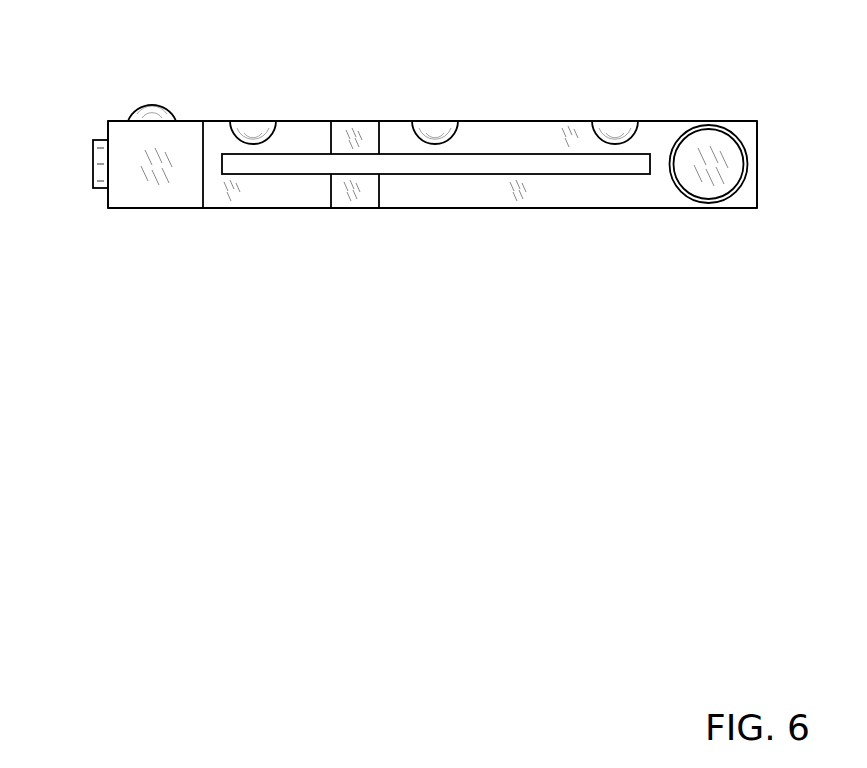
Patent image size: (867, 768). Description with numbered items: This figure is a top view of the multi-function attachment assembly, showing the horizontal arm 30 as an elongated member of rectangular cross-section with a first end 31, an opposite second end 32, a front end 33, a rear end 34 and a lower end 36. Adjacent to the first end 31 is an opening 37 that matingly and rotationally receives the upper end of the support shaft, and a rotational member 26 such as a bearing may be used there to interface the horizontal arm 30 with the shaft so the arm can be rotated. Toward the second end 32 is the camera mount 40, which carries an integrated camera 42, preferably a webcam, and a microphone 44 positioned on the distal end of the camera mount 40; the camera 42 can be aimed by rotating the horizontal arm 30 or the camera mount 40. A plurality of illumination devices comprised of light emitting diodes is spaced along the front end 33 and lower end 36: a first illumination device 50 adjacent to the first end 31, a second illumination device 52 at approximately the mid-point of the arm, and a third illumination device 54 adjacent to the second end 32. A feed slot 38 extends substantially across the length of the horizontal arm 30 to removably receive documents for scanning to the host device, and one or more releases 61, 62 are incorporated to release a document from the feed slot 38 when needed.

The rotational member 26 is at (712, 143).
The horizontal arm 30 is at (497, 208).
The first end 31 is at (759, 157).
The second end 32 is at (108, 197).
The front end 33 is at (507, 120).
The rear end 34 is at (433, 208).
The lower end 36 is at (284, 193).
The opening 37 is at (745, 148).
The feed slot 38 is at (553, 163).
The camera mount 40 is at (120, 140).
The camera 42 is at (152, 105).
The microphone 44 is at (93, 160).
The first illumination device 50 is at (252, 128).
The second illumination device 52 is at (435, 125).
The third illumination device 54 is at (615, 128).
The release 61 is at (360, 127).
The release 62 is at (360, 202).